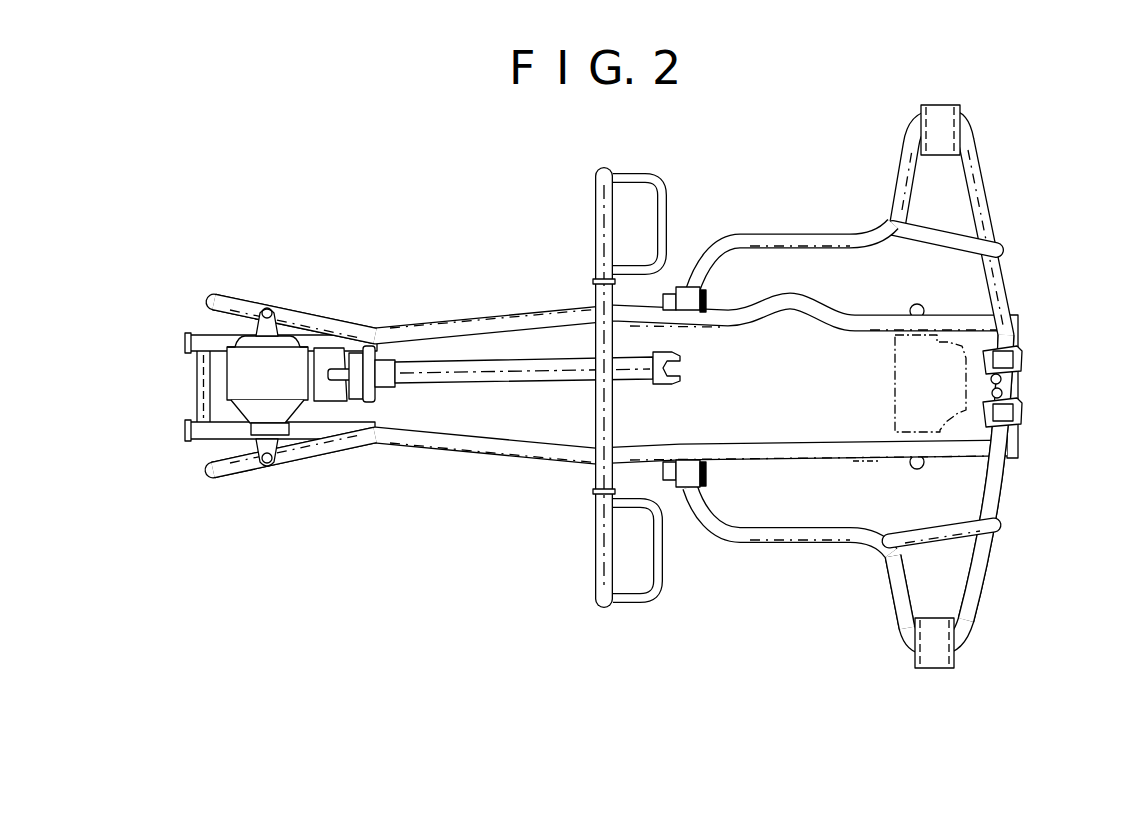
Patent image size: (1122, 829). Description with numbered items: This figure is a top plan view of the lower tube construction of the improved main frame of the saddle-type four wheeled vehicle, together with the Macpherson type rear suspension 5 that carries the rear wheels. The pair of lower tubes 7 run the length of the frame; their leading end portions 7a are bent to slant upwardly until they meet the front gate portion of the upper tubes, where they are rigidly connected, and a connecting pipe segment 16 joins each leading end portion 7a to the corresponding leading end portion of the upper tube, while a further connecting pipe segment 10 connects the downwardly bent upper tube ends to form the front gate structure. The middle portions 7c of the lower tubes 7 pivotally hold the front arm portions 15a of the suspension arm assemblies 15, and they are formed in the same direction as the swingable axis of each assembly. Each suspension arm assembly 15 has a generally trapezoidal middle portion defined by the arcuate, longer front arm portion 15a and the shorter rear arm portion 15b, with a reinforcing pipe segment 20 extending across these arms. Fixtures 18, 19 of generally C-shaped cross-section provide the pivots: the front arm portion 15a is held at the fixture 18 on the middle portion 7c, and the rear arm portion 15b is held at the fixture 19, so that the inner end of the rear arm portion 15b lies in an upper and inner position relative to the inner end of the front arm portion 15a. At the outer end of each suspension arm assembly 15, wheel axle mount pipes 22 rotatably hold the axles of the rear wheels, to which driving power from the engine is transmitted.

The rear suspension 5 is at (992, 197).
The lower tubes 7 is at (502, 316).
The leading end portions of the lower tubes 7a is at (338, 330).
The middle portions of the lower tubes 7c is at (733, 330).
The connecting pipe segment 10 is at (195, 385).
The suspension arm assembly 15 is at (889, 587).
The front arm portion 15a is at (793, 233).
The rear arm portion 15b is at (982, 605).
The connecting pipe segment 16 is at (210, 430).
The fixture 18 is at (704, 470).
The fixture 19 is at (1023, 410).
The reinforcing pipe segment 20 is at (923, 521).
The wheel axle mount pipes 22 is at (938, 669).